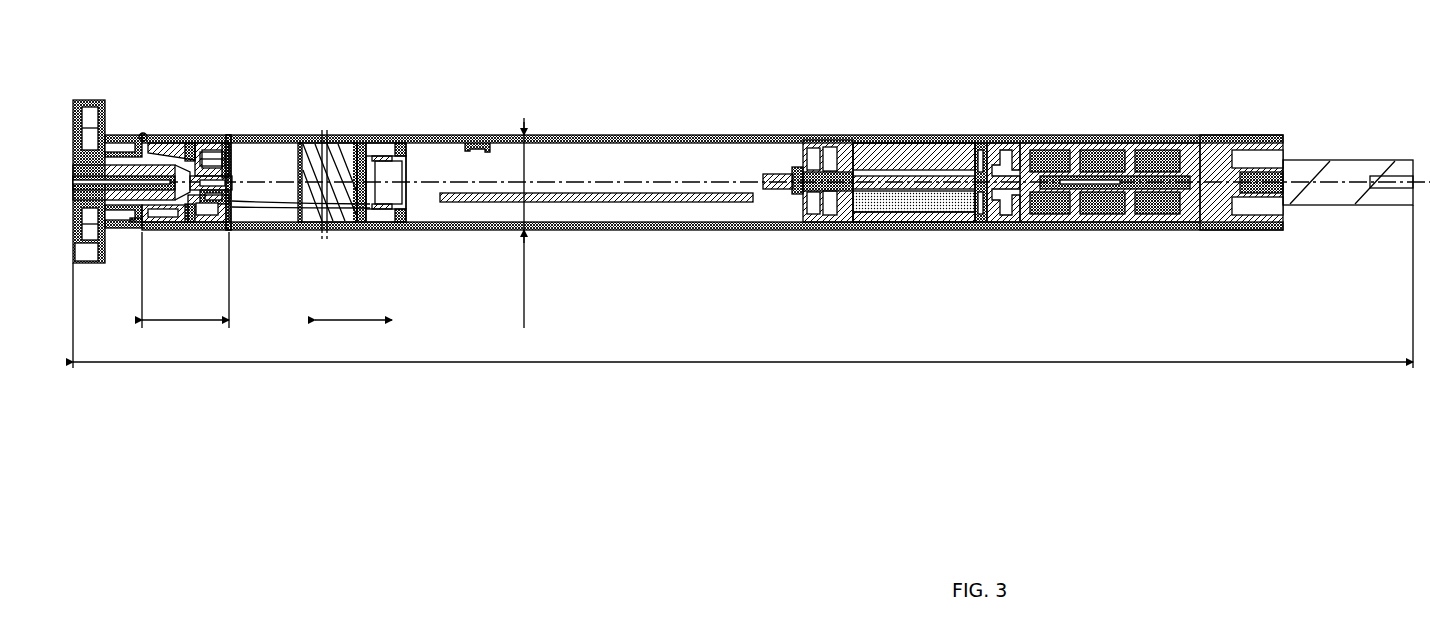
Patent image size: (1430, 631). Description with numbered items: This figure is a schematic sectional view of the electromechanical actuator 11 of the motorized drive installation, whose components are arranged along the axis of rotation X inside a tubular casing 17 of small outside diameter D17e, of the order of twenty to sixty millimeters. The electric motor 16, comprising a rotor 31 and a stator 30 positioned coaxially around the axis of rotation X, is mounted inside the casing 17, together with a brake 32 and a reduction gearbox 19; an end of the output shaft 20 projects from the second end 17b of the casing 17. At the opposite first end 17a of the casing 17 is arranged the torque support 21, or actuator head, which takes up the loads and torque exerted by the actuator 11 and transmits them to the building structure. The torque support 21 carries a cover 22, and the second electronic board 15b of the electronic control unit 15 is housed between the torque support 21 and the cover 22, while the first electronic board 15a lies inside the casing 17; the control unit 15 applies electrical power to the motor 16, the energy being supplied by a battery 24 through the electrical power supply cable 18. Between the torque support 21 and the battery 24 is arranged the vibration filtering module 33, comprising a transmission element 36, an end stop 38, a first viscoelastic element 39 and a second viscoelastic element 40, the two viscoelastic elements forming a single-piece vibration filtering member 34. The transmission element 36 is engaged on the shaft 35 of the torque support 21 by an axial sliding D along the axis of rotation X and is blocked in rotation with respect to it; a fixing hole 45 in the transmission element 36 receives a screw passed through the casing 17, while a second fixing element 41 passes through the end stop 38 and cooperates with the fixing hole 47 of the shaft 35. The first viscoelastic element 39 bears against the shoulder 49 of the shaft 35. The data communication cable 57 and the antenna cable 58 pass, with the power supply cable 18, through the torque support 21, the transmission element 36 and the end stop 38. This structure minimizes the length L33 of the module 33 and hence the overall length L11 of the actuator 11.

The electromechanical actuator 11 is at (1338, 127).
The electronic control unit 15 is at (88, 125).
The first electronic board 15a is at (596, 204).
The second electronic board 15b is at (103, 126).
The electric motor 16 is at (888, 160).
The casing 17 is at (265, 135).
The first end of the casing 17a is at (158, 132).
The second end of the casing 17b is at (1292, 138).
The electrical power supply cable 18 is at (364, 172).
The reduction gearbox 19 is at (1128, 160).
The output shaft 20 is at (1340, 206).
The torque support 21 is at (105, 233).
The cover 22 is at (76, 104).
The battery 24 is at (332, 147).
The stator 30 is at (935, 176).
The rotor 31 is at (856, 152).
The brake 32 is at (996, 140).
The vibration filtering module 33 is at (192, 223).
The vibration filtering member 34 is at (206, 150).
The shaft 35 is at (232, 198).
The transmission element 36 is at (175, 223).
The end stop 38 is at (228, 157).
The first viscoelastic element 39 is at (143, 133).
The second viscoelastic element 40 is at (222, 138).
The second fixing element 41 is at (232, 178).
The fixing hole 45 is at (188, 143).
The fixing hole 47 is at (232, 226).
The shoulder 49 is at (133, 224).
The data communication cable 57 is at (285, 226).
The antenna cable 58 is at (275, 226).
The axis of rotation X is at (584, 181).
The axial sliding D is at (353, 306).
The outside diameter of the casing D17e is at (496, 223).
The length of the vibration filtering module L33 is at (185, 280).
The length of the electromechanical actuator L11 is at (743, 286).